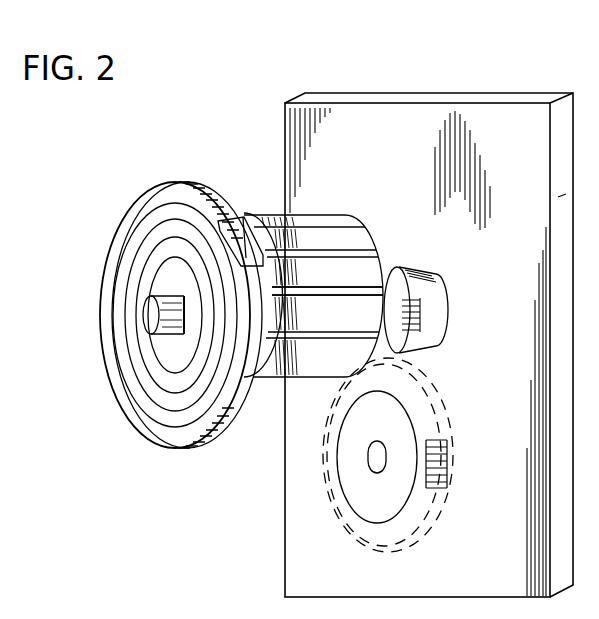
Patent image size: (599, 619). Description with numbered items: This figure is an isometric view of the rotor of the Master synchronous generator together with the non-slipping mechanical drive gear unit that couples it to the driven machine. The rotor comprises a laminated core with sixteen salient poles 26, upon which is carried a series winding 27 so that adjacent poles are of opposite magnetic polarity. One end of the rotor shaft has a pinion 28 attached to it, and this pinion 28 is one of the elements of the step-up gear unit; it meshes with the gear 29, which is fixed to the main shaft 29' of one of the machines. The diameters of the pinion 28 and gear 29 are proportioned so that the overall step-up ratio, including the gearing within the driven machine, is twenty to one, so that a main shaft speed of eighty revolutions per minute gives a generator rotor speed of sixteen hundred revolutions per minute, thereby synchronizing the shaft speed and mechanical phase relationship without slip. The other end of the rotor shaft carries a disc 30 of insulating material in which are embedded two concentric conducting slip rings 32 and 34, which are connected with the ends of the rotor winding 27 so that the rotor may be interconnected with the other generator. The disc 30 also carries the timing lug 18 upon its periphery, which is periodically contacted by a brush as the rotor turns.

The timing lug 18 is at (240, 227).
The salient poles 26 is at (353, 240).
The series winding 27 is at (270, 302).
The pinion 28 is at (402, 276).
The gear 29 is at (406, 455).
The main shaft 29' is at (353, 457).
The disc 30 is at (164, 192).
The slip ring 32 is at (152, 218).
The slip ring 34 is at (152, 258).